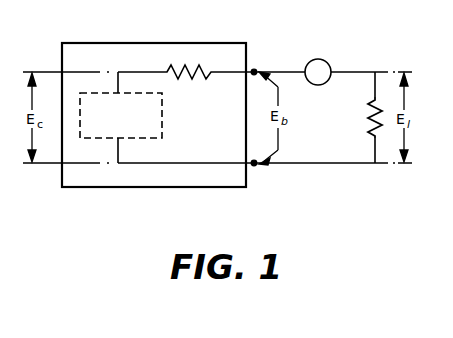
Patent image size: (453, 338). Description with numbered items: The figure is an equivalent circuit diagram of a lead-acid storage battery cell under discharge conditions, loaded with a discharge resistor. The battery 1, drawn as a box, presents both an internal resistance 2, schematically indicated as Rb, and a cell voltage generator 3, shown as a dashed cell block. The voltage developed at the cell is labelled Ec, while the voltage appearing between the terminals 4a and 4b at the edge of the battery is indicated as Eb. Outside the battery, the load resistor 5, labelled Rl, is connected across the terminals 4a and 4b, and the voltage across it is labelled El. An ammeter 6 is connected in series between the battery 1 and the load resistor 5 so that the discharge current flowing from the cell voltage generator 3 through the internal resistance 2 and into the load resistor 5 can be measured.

The battery 1 is at (110, 43).
The internal resistance 2 is at (203, 70).
The cell voltage generator 3 is at (166, 150).
The terminal 4a is at (256, 68).
The terminal 4b is at (256, 167).
The load resistor 5 is at (375, 100).
The ammeter 6 is at (322, 59).